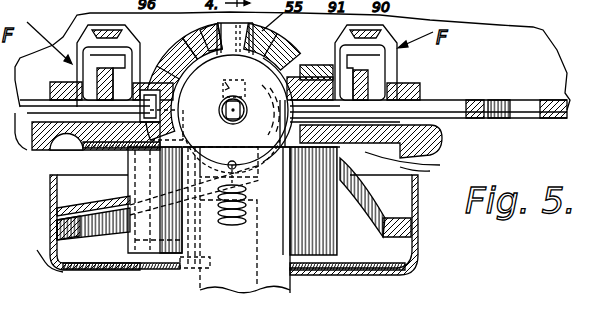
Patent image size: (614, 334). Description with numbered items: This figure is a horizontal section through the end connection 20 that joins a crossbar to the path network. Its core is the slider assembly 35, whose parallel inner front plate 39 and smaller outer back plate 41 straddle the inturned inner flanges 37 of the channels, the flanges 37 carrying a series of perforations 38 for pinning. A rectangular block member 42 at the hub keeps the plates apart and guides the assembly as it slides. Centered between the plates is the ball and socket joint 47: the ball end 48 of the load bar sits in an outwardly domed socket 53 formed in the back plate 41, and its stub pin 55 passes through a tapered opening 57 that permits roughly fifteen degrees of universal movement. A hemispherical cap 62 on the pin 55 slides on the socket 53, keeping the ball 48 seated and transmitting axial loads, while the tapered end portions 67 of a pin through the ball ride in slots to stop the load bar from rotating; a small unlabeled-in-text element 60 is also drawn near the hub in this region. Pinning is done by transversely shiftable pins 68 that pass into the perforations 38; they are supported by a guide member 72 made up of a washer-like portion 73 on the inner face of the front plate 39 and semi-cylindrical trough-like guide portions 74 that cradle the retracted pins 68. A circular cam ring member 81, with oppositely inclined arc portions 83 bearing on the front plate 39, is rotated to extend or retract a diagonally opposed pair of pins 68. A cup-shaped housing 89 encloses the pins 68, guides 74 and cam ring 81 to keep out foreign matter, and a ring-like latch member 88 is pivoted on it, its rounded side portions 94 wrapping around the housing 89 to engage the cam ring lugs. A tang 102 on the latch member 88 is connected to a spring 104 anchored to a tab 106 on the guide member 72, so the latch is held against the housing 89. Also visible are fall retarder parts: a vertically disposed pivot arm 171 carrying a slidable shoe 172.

The end connection 20 is at (533, 217).
The slider assembly 35 is at (443, 133).
The inner flanges 37 is at (545, 121).
The perforations 38 is at (515, 107).
The front plate 39 is at (420, 158).
The back plate 41 is at (420, 89).
The block member 42 is at (170, 108).
The ball and socket joint 47 is at (204, 23).
The ball end 48 is at (182, 68).
The socket 53 is at (175, 55).
The pin 55 is at (235, 39).
The tapered opening 57 is at (186, 37).
The detent 60 is at (224, 82).
The cap 62 is at (290, 45).
The end portions 67 is at (245, 107).
The pins 68 is at (308, 64).
The guide member 72 is at (417, 171).
The washer-like portion 73 is at (97, 150).
The trough-like guide portions 74 is at (333, 236).
The cam ring member 81 is at (94, 212).
The inclined arc portions 83 is at (107, 226).
The latch member 88 is at (148, 273).
The housing 89 is at (418, 201).
The side portions 94 is at (37, 260).
The tang 102 is at (293, 283).
The spring 104 is at (254, 228).
The tab 106 is at (194, 206).
The pivot arm 171 is at (86, 76).
The shoe 172 is at (33, 150).